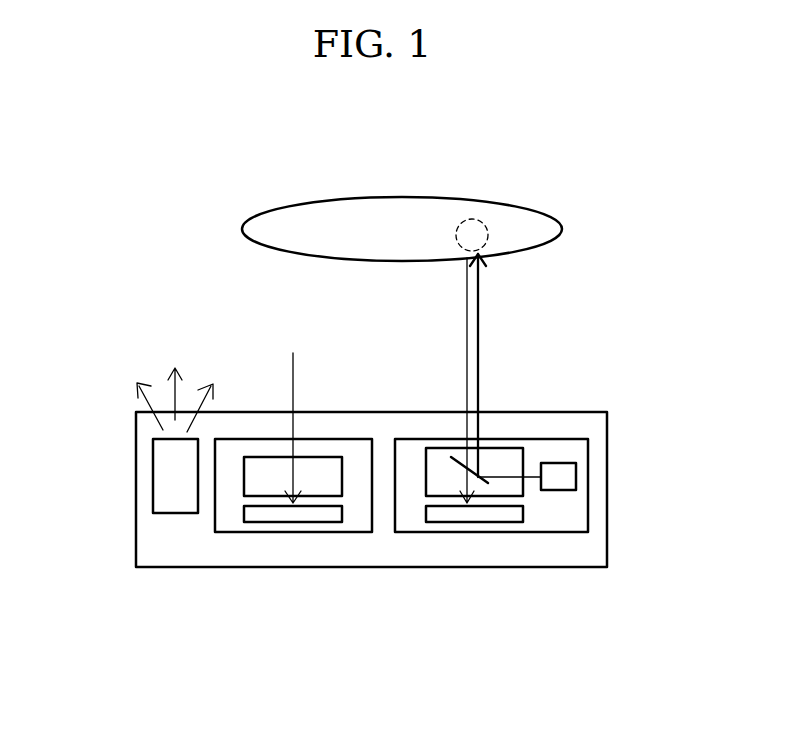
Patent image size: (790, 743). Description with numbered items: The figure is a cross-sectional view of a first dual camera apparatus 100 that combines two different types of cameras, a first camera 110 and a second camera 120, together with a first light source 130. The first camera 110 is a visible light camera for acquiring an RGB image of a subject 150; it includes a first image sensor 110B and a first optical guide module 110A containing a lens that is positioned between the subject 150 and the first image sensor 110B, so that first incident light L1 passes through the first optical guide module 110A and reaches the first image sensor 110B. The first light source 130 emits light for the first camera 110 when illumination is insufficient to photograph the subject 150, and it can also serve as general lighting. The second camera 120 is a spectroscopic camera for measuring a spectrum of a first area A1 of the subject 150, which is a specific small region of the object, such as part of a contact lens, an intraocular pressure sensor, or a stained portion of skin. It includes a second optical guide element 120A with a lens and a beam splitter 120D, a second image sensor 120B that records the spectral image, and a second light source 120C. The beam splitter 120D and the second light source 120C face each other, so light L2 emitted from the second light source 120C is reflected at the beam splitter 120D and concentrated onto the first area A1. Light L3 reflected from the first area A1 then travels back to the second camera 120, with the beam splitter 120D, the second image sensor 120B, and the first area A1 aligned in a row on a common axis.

The first dual camera apparatus 100 is at (607, 537).
The first camera 110 is at (237, 532).
The first optical guide module 110A is at (273, 457).
The first image sensor 110B is at (292, 522).
The second camera 120 is at (490, 532).
The second optical guide element 120A is at (503, 448).
The second image sensor 120B is at (472, 523).
The second light source 120C is at (576, 477).
The beam splitter 120D is at (458, 465).
The first light source 130 is at (152, 476).
The subject 150 is at (507, 205).
The first area A1 is at (473, 218).
The first incident light L1 is at (293, 372).
The light L2 is at (478, 372).
The light L3 is at (467, 372).